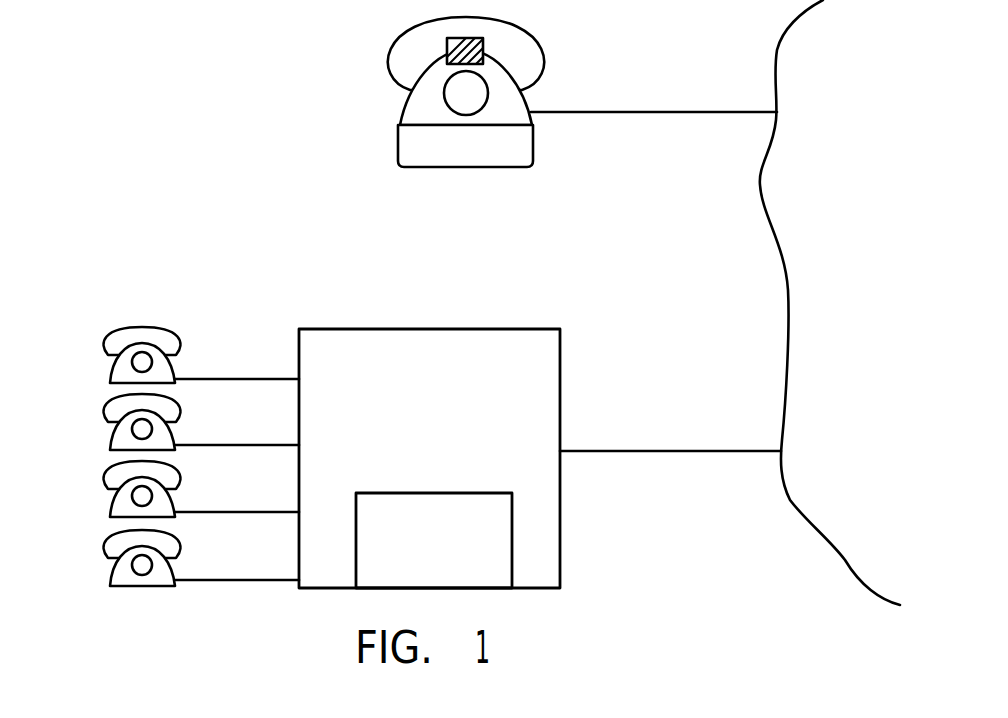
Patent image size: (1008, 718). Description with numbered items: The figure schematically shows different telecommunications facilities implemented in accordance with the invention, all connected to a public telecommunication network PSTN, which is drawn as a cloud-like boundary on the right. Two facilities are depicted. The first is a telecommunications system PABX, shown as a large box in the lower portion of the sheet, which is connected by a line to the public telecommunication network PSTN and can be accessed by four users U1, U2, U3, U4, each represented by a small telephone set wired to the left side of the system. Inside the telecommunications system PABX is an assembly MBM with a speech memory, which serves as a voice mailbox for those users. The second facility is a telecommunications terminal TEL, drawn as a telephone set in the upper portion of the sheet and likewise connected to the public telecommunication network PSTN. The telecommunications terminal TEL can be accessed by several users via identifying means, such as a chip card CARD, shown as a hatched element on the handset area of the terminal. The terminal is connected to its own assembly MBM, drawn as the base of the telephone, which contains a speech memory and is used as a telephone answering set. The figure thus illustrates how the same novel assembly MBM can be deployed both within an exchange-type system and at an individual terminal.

The telecommunications terminal TEL is at (414, 107).
The chip card CARD is at (481, 45).
The assembly MBM is at (444, 356).
The telecommunications system PABX is at (463, 407).
The public telecommunication network PSTN is at (830, 302).
The user U1 is at (107, 352).
The user U2 is at (106, 420).
The user U3 is at (106, 487).
The user U4 is at (105, 563).